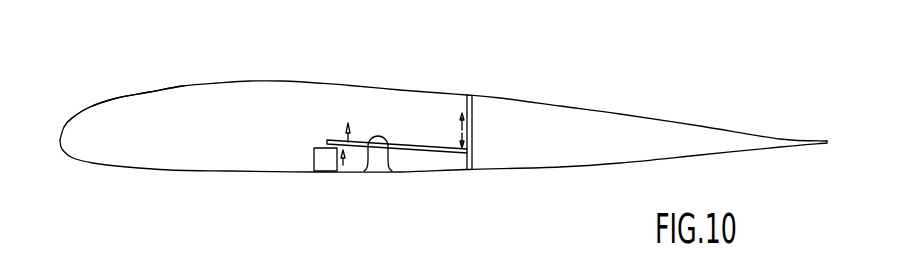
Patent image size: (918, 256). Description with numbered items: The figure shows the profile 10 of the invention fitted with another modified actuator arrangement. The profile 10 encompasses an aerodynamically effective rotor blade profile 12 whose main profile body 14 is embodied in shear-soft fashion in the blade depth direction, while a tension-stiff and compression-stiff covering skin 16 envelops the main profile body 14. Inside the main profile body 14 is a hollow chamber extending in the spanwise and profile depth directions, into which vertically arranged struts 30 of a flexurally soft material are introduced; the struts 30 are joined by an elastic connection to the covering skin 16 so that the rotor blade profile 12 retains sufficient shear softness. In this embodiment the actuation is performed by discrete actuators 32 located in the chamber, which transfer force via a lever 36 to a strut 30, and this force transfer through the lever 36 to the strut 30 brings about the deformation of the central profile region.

The profile 10 is at (443, 126).
The rotor blade profile 12 is at (156, 72).
The main profile body 14 is at (260, 84).
The upper covering skin 16 is at (238, 173).
The strut 30 is at (472, 115).
The discrete actuator 32 is at (327, 160).
The lever 36 is at (440, 153).